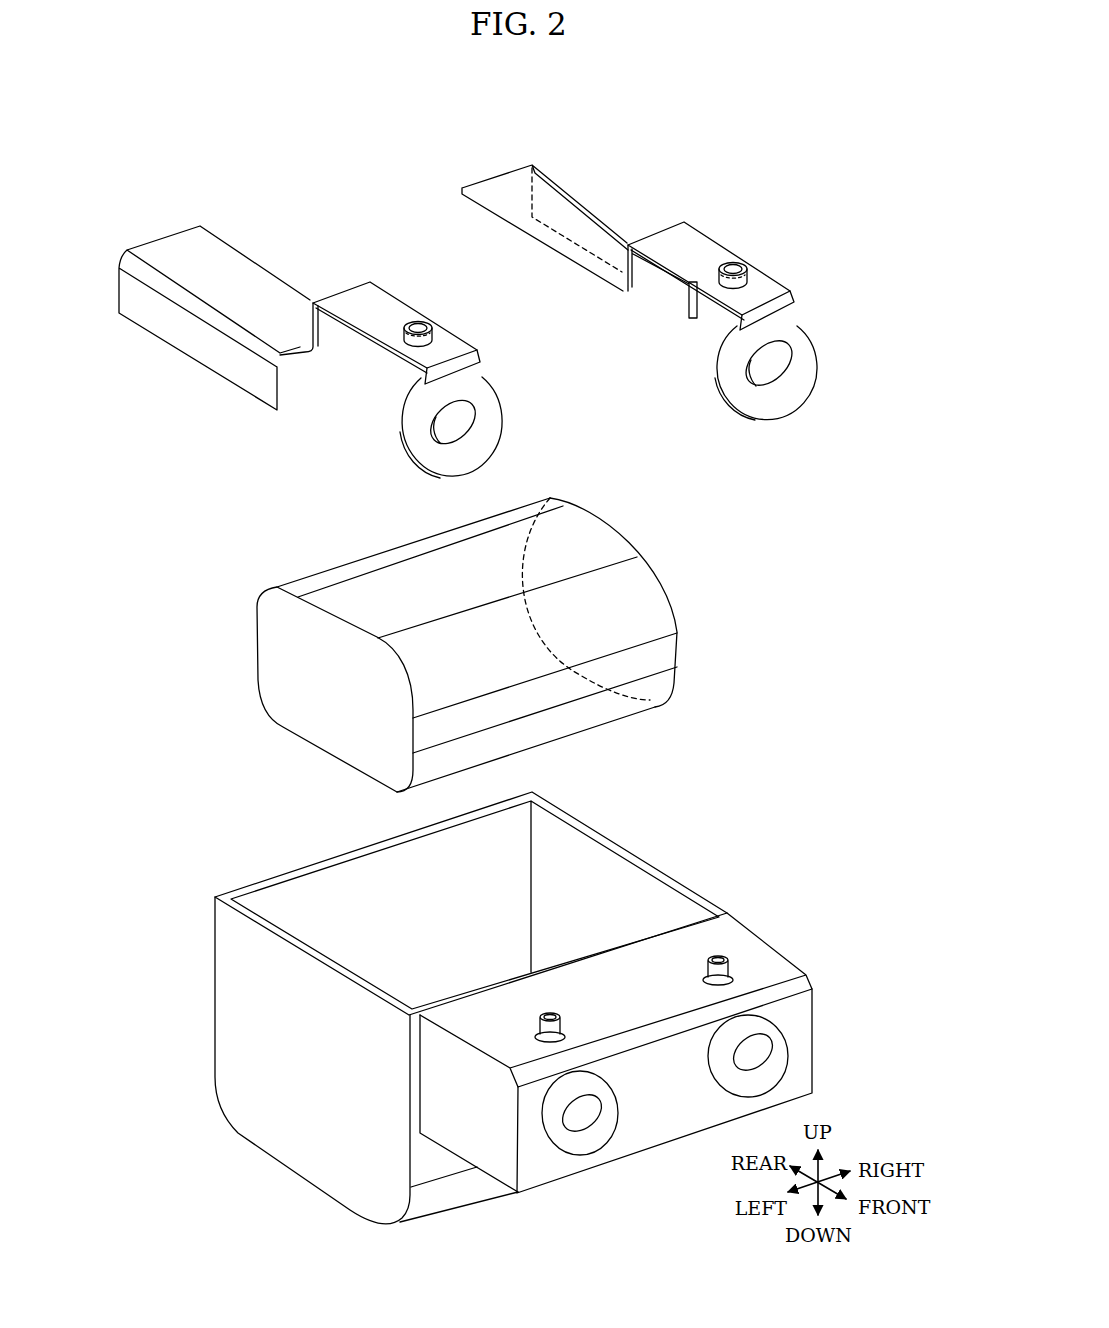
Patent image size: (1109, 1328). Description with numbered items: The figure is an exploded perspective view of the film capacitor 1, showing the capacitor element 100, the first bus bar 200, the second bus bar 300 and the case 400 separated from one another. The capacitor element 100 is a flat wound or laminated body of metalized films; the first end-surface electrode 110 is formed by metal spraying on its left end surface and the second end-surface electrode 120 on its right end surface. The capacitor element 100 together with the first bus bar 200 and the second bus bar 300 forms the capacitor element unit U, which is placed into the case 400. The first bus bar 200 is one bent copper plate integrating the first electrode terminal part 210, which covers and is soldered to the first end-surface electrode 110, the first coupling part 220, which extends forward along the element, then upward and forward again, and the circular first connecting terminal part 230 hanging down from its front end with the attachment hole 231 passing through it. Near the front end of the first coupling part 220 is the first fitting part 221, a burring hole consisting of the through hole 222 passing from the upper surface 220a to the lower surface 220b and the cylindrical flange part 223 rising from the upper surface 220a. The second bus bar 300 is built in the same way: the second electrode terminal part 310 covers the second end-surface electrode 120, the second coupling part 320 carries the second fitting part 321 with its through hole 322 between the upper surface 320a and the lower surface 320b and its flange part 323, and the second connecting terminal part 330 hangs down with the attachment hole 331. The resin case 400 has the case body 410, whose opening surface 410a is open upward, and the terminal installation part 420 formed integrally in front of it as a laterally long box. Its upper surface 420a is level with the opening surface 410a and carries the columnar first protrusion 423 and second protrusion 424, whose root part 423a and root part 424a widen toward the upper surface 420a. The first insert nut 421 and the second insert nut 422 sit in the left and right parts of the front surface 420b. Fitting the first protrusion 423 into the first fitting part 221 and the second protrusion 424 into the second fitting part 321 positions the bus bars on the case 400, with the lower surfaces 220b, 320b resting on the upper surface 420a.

The film capacitor 1 is at (200, 1133).
The capacitor element 100 is at (633, 533).
The first end-surface electrode 110 is at (282, 662).
The second end-surface electrode 120 is at (643, 617).
The first bus bar 200 is at (233, 237).
The first electrode terminal part 210 is at (207, 357).
The first coupling part 220 is at (273, 293).
The upper surface 220a is at (405, 317).
The lower surface 220b is at (373, 340).
The first fitting part 221 is at (403, 327).
The through hole 222 is at (413, 347).
The flange part 223 is at (433, 327).
The first connecting terminal part 230 is at (500, 393).
The attachment hole 231 is at (440, 440).
The second bus bar 300 is at (563, 173).
The second electrode terminal part 310 is at (660, 290).
The second coupling part 320 is at (597, 228).
The upper surface 320a is at (717, 260).
The lower surface 320b is at (687, 300).
The second fitting part 321 is at (717, 270).
The through hole 322 is at (727, 300).
The flange part 323 is at (750, 267).
The second connecting terminal part 330 is at (817, 330).
The attachment hole 331 is at (753, 383).
The case 400 is at (623, 833).
The case body 410 is at (255, 878).
The opening surface 410a is at (340, 885).
The terminal installation part 420 is at (678, 1145).
The upper surface 420a is at (672, 948).
The front surface 420b is at (800, 1082).
The first insert nut 421 is at (582, 1133).
The second insert nut 422 is at (790, 1042).
The first protrusion 423 is at (548, 1013).
The root part 423a is at (538, 1030).
The second protrusion 424 is at (723, 955).
The root part 424a is at (733, 979).
The capacitor element unit U is at (752, 630).